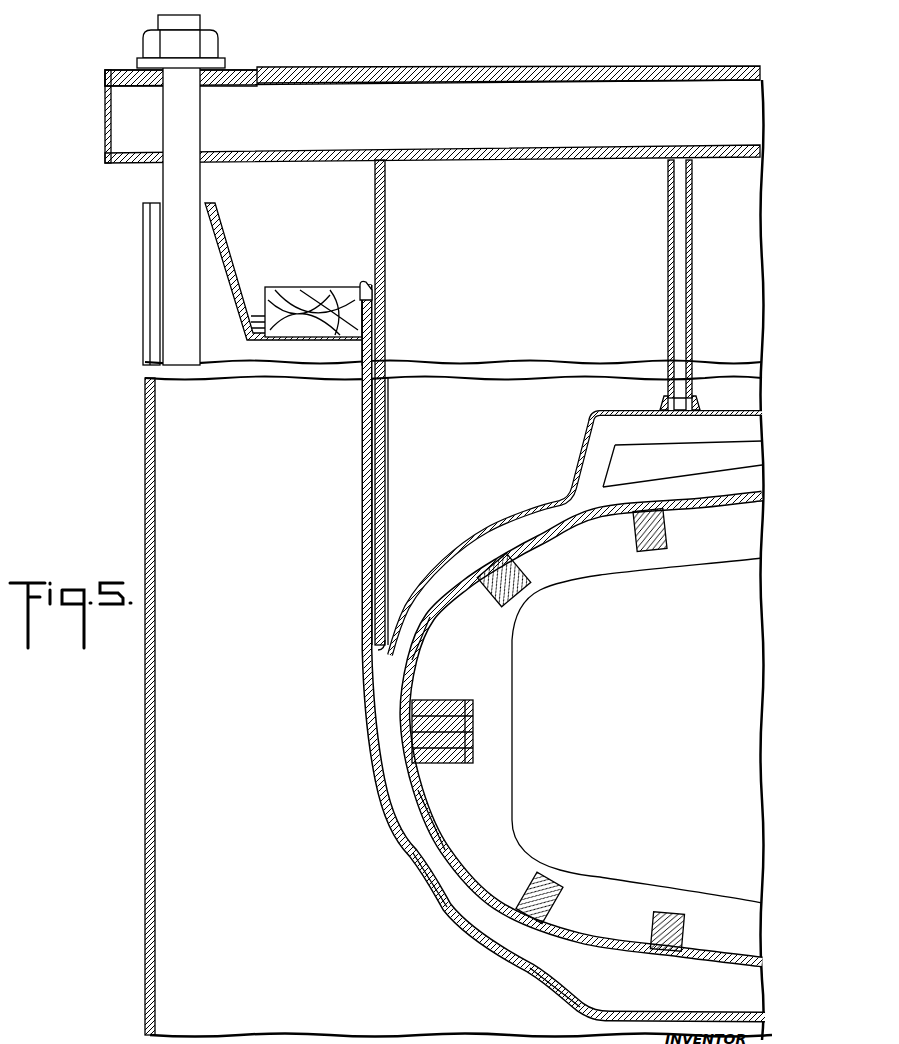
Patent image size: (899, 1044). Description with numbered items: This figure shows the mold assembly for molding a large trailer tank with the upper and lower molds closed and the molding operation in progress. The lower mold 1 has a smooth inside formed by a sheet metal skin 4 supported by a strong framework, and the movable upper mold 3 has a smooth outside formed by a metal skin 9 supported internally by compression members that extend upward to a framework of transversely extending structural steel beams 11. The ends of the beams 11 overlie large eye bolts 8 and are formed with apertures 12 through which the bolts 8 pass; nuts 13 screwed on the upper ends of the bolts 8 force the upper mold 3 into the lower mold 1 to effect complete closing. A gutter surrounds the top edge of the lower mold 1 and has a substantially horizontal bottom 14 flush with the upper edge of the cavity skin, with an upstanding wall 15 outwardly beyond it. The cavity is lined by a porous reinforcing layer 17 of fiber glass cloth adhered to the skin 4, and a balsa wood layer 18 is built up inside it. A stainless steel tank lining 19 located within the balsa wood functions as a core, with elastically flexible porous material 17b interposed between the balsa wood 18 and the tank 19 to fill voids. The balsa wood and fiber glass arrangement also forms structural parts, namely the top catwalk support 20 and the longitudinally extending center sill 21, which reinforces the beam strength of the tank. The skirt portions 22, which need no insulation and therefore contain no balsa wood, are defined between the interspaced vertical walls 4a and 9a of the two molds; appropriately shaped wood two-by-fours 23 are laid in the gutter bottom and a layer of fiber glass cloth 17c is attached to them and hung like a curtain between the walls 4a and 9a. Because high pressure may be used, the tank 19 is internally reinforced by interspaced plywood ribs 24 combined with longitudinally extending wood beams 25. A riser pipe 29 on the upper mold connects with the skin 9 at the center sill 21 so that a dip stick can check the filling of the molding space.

The lower mold 1 is at (142, 1014).
The upper mold 3 is at (588, 66).
The sheet metal skin 4 is at (445, 905).
The vertical wall 4a is at (362, 505).
The eye bolt 8 is at (183, 134).
The metal skin 9 is at (498, 528).
The vertical wall 9a is at (385, 212).
The structural steel beam 11 is at (458, 85).
The aperture 12 is at (132, 77).
The nut 13 is at (212, 42).
The gutter bottom 14 is at (371, 300).
The upstanding wall 15 is at (226, 232).
The porous reinforcing layer 17 is at (362, 405).
The elastically flexible porous material 17b is at (426, 660).
The fiber glass cloth layer 17c is at (372, 330).
The balsa wood layer 18 is at (400, 865).
The stainless steel tank lining 19 is at (428, 805).
The top catwalk support 20 is at (725, 999).
The center sill 21 is at (690, 474).
The skirt portion 22 is at (388, 452).
The wood two-by-four 23 is at (298, 302).
The plywood rib 24 is at (605, 575).
The wood beam 25 is at (668, 532).
The riser pipe 29 is at (692, 272).